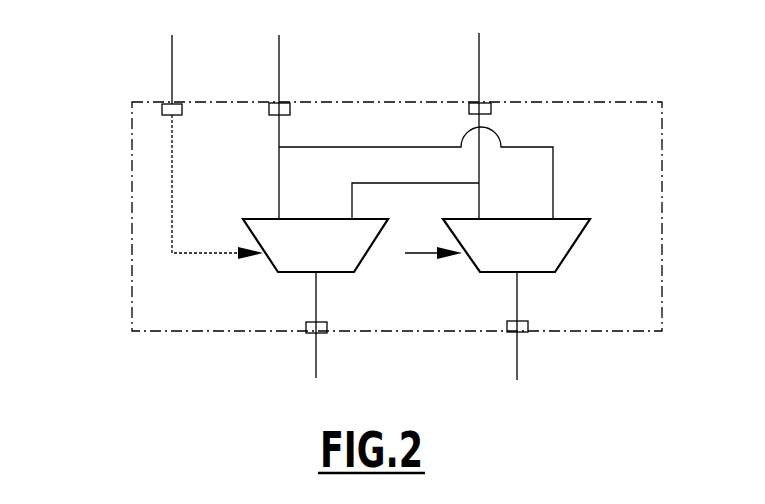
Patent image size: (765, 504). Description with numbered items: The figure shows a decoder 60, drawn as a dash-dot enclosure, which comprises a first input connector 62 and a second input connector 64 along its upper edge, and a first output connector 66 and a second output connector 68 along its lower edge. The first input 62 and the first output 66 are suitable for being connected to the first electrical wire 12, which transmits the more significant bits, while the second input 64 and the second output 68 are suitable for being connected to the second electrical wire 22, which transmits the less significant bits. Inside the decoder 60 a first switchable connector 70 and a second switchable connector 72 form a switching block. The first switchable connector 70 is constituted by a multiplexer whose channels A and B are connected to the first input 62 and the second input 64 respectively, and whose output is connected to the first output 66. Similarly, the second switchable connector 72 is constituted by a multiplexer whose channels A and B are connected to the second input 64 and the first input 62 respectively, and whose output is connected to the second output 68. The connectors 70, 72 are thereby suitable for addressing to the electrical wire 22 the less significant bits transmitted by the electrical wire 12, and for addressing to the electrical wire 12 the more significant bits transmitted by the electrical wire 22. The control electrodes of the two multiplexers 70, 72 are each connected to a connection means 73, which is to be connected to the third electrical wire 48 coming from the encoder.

The first electrical wire 12 is at (279, 58).
The second electrical wire 22 is at (479, 55).
The third electrical wire 48 is at (172, 55).
The decoder 60 is at (190, 342).
The first input connector 62 is at (272, 115).
The second input connector 64 is at (482, 103).
The first output connector 66 is at (310, 334).
The second output connector 68 is at (515, 333).
The first switchable connector 70 is at (272, 265).
The second switchable connector 72 is at (566, 255).
The connection means 73 is at (166, 115).